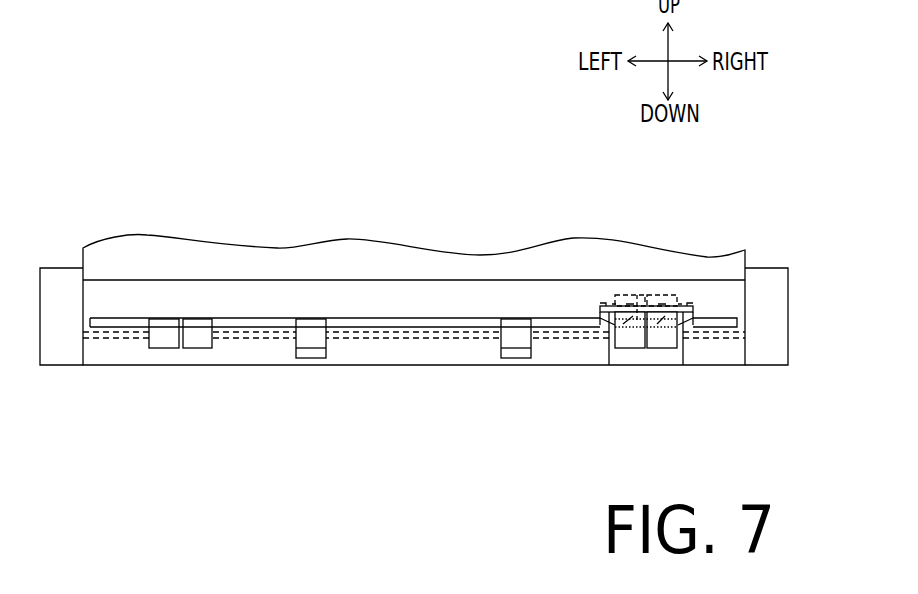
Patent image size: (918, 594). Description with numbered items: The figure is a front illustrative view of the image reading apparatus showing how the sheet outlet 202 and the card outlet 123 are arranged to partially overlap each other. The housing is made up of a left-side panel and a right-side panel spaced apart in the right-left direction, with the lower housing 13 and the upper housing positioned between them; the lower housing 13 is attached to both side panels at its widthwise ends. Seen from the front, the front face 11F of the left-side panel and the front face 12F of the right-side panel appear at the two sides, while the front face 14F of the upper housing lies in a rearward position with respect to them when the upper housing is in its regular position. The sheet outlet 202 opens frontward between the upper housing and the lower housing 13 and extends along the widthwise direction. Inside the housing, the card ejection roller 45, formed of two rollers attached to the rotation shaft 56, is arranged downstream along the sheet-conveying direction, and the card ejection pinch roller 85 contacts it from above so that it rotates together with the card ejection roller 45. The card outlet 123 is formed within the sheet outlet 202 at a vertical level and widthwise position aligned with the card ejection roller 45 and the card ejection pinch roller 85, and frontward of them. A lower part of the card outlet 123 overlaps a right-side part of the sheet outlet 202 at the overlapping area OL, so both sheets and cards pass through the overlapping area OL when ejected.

The front face of the left-side panel 11F is at (59, 358).
The front face of the right-side panel 12F is at (772, 352).
The lower housing 13 is at (353, 358).
The front face of the upper housing 14F is at (272, 297).
The rotation shaft 56 is at (248, 340).
The sheet outlet 202 is at (401, 323).
The card outlet 123 is at (663, 300).
The card ejection roller 45 is at (632, 345).
The card ejection pinch roller 85 is at (672, 293).
The overlapping area OL is at (637, 305).